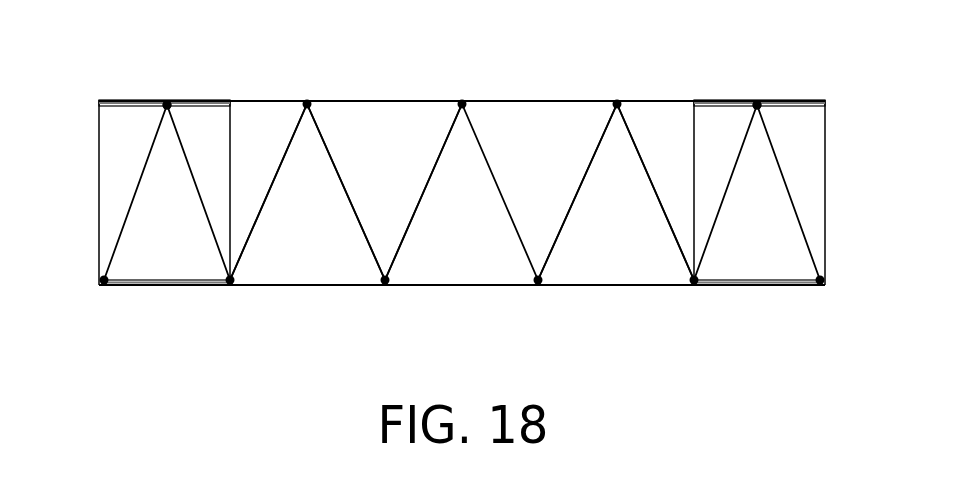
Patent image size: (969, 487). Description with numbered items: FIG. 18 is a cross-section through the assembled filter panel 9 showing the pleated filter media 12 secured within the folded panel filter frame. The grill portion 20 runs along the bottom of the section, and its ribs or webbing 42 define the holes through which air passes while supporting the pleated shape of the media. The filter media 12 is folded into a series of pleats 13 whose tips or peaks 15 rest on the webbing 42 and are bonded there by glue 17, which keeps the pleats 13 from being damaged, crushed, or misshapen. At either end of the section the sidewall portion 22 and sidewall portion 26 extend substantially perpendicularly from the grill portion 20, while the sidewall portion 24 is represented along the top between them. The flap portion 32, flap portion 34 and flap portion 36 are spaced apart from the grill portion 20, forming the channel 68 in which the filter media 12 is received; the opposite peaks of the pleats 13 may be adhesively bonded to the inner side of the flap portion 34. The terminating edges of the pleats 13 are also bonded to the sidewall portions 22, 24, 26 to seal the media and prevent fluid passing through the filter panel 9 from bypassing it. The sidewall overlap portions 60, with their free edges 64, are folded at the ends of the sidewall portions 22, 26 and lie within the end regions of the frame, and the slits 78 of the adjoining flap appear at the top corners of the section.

The filter panel 9 is at (457, 200).
The filter media 12 is at (172, 256).
The pleats 13 is at (204, 195).
The tips or peaks 15 is at (369, 272).
The glue 17 is at (390, 284).
The grill portion 20 is at (492, 287).
The sidewall portion 22 is at (126, 193).
The sidewall portion 24 is at (540, 122).
The sidewall portion 26 is at (790, 156).
The flap portion 32 is at (128, 112).
The flap portion 34 is at (385, 100).
The flap portion 36 is at (797, 104).
The ribs or webbing 42 is at (583, 287).
The sidewall overlap portions 60 is at (203, 127).
The free edges 64 is at (780, 108).
The channel 68 is at (638, 263).
The slits 78 is at (178, 107).